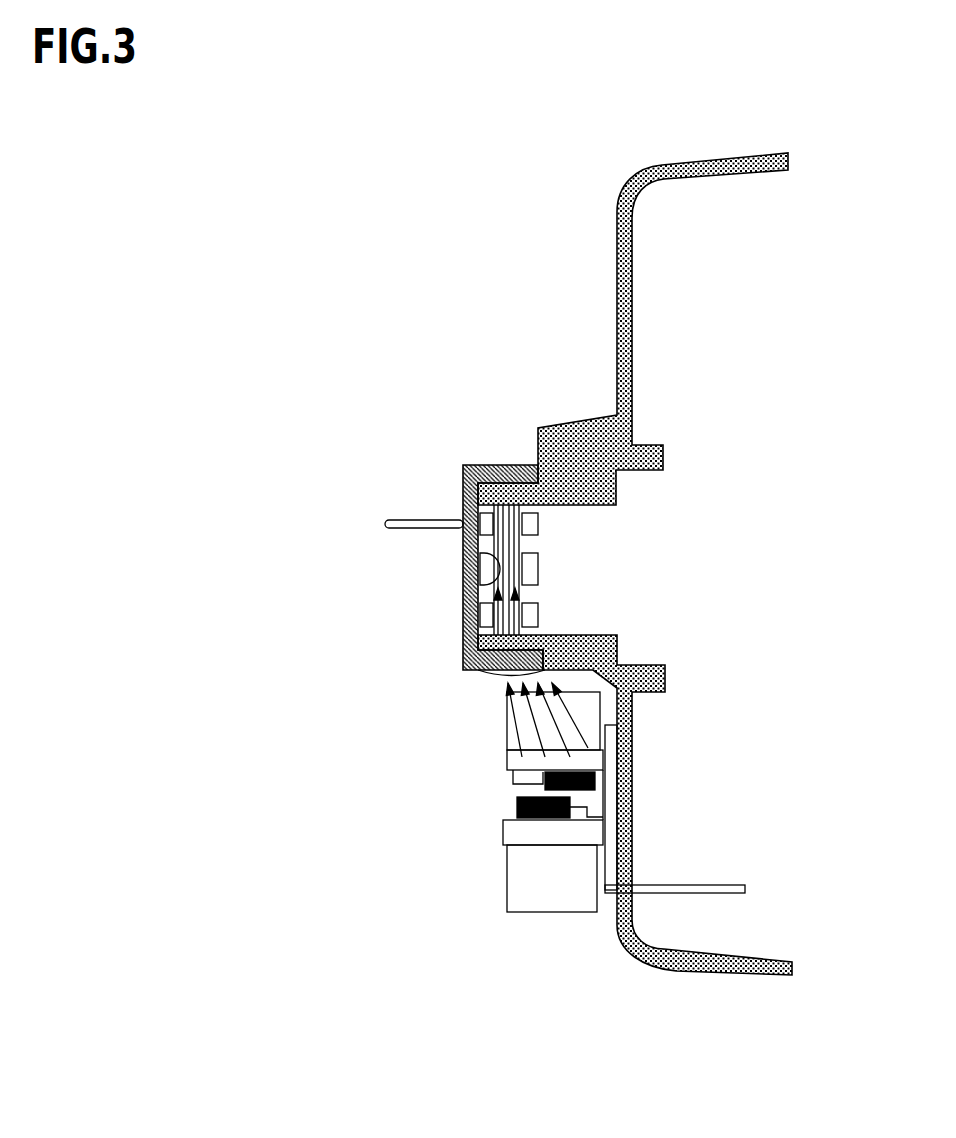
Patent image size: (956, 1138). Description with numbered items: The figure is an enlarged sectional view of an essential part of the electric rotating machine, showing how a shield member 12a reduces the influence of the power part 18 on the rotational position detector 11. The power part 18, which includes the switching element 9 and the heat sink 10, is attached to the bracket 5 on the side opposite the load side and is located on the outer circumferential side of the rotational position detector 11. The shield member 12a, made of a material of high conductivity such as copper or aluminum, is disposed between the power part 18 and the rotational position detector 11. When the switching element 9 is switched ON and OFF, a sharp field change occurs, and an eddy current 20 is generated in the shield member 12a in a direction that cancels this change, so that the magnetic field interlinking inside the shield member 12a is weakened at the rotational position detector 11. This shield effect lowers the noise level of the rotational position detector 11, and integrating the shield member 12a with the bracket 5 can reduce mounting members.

The bracket 5 is at (750, 173).
The shield member 12a is at (500, 465).
The rotational position detector 11 is at (493, 542).
The eddy current 20 is at (487, 677).
The power part 18 is at (618, 870).
The heat sink 10 is at (613, 998).
The switching element 9 is at (552, 818).